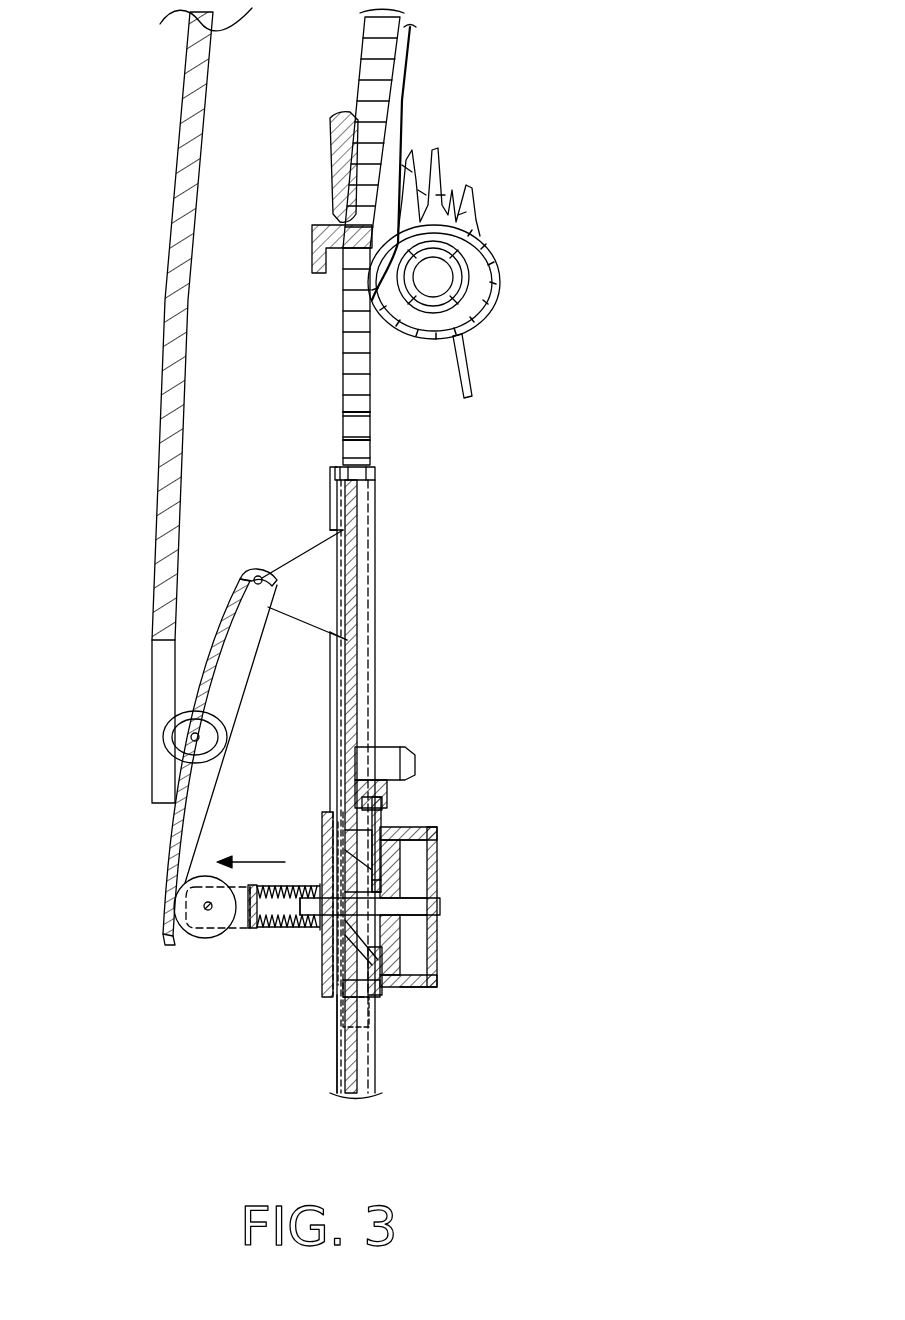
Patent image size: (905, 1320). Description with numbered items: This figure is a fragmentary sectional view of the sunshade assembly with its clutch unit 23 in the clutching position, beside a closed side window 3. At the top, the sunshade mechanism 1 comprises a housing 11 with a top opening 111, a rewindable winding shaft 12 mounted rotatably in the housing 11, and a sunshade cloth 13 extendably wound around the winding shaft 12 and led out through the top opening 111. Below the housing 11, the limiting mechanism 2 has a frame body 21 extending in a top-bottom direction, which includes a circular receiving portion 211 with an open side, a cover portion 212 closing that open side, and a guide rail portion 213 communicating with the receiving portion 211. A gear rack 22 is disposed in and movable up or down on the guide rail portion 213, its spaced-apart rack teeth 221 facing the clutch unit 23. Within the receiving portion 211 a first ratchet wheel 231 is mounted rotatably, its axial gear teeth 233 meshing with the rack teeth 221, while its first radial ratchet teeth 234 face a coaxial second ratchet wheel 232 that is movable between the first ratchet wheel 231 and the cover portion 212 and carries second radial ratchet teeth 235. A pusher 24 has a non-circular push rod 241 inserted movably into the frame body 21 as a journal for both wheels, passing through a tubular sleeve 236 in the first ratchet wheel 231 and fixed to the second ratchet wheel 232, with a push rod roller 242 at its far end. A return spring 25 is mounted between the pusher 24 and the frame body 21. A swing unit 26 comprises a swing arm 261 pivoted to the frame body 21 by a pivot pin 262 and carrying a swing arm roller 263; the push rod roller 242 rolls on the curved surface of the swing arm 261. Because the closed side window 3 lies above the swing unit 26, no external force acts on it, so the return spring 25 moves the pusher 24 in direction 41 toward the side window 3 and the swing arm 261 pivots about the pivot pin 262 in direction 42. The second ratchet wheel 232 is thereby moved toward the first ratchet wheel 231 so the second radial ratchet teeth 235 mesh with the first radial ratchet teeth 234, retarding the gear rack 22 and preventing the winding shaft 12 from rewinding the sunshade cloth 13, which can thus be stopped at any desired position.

The sunshade mechanism 1 is at (512, 309).
The housing 11 is at (500, 274).
The winding shaft 12 is at (460, 257).
The sunshade cloth 13 is at (414, 46).
The top opening 111 is at (401, 136).
The limiting mechanism 2 is at (428, 570).
The frame body 21 is at (376, 556).
The receiving portion 211 is at (333, 958).
The cover portion 212 is at (440, 942).
The guide rail portion 213 is at (362, 608).
The gear rack 22 is at (371, 364).
The rack teeth 221 is at (365, 415).
The clutch unit 23 is at (416, 974).
The first ratchet wheel 231 is at (336, 1022).
The second ratchet wheel 232 is at (400, 928).
The axial gear teeth 233 is at (354, 826).
The first radial ratchet teeth 234 is at (352, 880).
The second radial ratchet teeth 235 is at (395, 845).
The tubular sleeve 236 is at (381, 868).
The pusher 24 is at (227, 938).
The push rod 241 is at (410, 903).
The push rod roller 242 is at (203, 932).
The return spring 25 is at (270, 930).
The swing unit 26 is at (240, 615).
The swing arm 261 is at (168, 832).
The pivot pin 262 is at (256, 575).
The swing arm roller 263 is at (178, 734).
The side window 3 is at (172, 242).
The direction 41 is at (268, 862).
The direction 42 is at (200, 650).